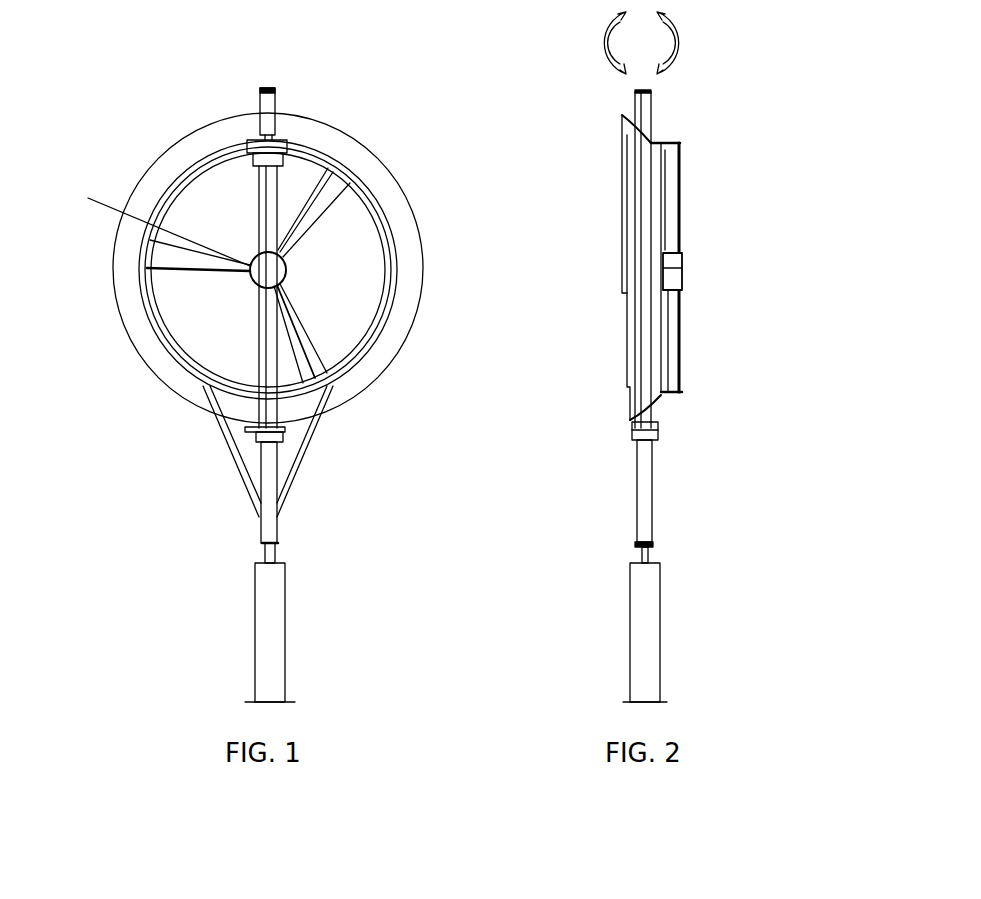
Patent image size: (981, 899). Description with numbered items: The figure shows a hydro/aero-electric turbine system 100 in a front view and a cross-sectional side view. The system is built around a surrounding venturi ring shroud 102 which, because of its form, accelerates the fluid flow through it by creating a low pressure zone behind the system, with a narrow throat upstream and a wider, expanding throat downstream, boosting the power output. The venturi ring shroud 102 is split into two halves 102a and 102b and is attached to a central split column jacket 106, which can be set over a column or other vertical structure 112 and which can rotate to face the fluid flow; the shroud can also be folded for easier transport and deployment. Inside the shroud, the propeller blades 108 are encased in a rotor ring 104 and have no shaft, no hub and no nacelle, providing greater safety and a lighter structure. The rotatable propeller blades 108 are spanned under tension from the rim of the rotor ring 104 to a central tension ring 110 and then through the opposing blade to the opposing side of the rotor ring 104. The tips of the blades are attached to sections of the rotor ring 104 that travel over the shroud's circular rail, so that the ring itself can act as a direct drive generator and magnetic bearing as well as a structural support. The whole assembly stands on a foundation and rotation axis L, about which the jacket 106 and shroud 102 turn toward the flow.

In FIG. 1, the hydro/aero-electric turbine system 100 is at (78, 530).
In FIG. 2, the hydro/aero-electric turbine system 100 is at (775, 71).
In FIG. 1, the venturi ring shroud 102 is at (330, 140).
In FIG. 2, the venturi ring shroud 102 is at (627, 147).
In FIG. 1, the first half of venturi ring shroud 102a is at (142, 353).
In FIG. 1, the second half of venturi ring shroud 102b is at (383, 360).
In FIG. 1, the rotor ring 104 is at (357, 357).
In FIG. 2, the rotor ring 104 is at (660, 148).
In FIG. 1, the central split column jacket 106 is at (264, 222).
In FIG. 2, the central split column jacket 106 is at (652, 125).
In FIG. 1, the propeller blades 108 is at (160, 252).
In FIG. 2, the propeller blades 108 is at (684, 345).
In FIG. 1, the central tension ring 110 is at (290, 268).
In FIG. 2, the central tension ring 110 is at (684, 252).
In FIG. 1, the column or other vertical structure 112 is at (265, 553).
In FIG. 2, the column or other vertical structure 112 is at (637, 548).
In FIG. 1, the foundation and rotation axis L is at (277, 637).
In FIG. 2, the foundation and rotation axis L is at (655, 637).